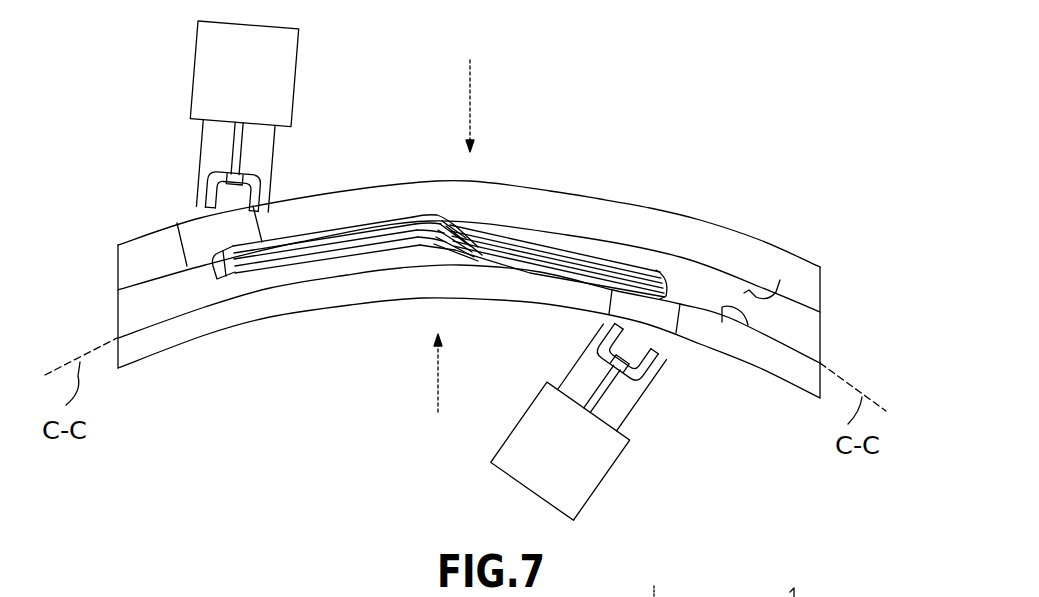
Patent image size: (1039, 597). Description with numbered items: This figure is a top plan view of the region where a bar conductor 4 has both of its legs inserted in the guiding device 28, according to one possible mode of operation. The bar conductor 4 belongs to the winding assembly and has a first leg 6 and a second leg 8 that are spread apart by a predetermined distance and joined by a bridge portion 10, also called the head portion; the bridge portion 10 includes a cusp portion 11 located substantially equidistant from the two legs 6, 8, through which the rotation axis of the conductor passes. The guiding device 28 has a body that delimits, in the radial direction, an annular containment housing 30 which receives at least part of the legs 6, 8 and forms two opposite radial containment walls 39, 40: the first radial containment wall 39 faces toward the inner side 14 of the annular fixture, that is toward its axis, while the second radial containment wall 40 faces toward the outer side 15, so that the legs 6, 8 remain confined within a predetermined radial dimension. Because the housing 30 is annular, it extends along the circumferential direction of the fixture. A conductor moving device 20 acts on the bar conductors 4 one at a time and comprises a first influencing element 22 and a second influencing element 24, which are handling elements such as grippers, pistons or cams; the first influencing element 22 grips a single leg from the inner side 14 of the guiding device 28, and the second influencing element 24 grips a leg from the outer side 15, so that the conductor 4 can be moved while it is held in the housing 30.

The bar conductor 4 is at (465, 274).
The first leg 6 is at (247, 276).
The second leg 8 is at (660, 270).
The bridge portion 10 is at (348, 246).
The cusp portion 11 is at (433, 250).
The inner side 14 is at (446, 393).
The outer side 15 is at (471, 90).
The conductor moving device 20 is at (384, 269).
The first influencing element 22 is at (626, 353).
The second influencing element 24 is at (233, 191).
The guiding device 28 is at (807, 292).
The annular containment housing 30 is at (789, 325).
The first radial containment wall 39 is at (780, 282).
The radial containment wall 40 is at (748, 325).